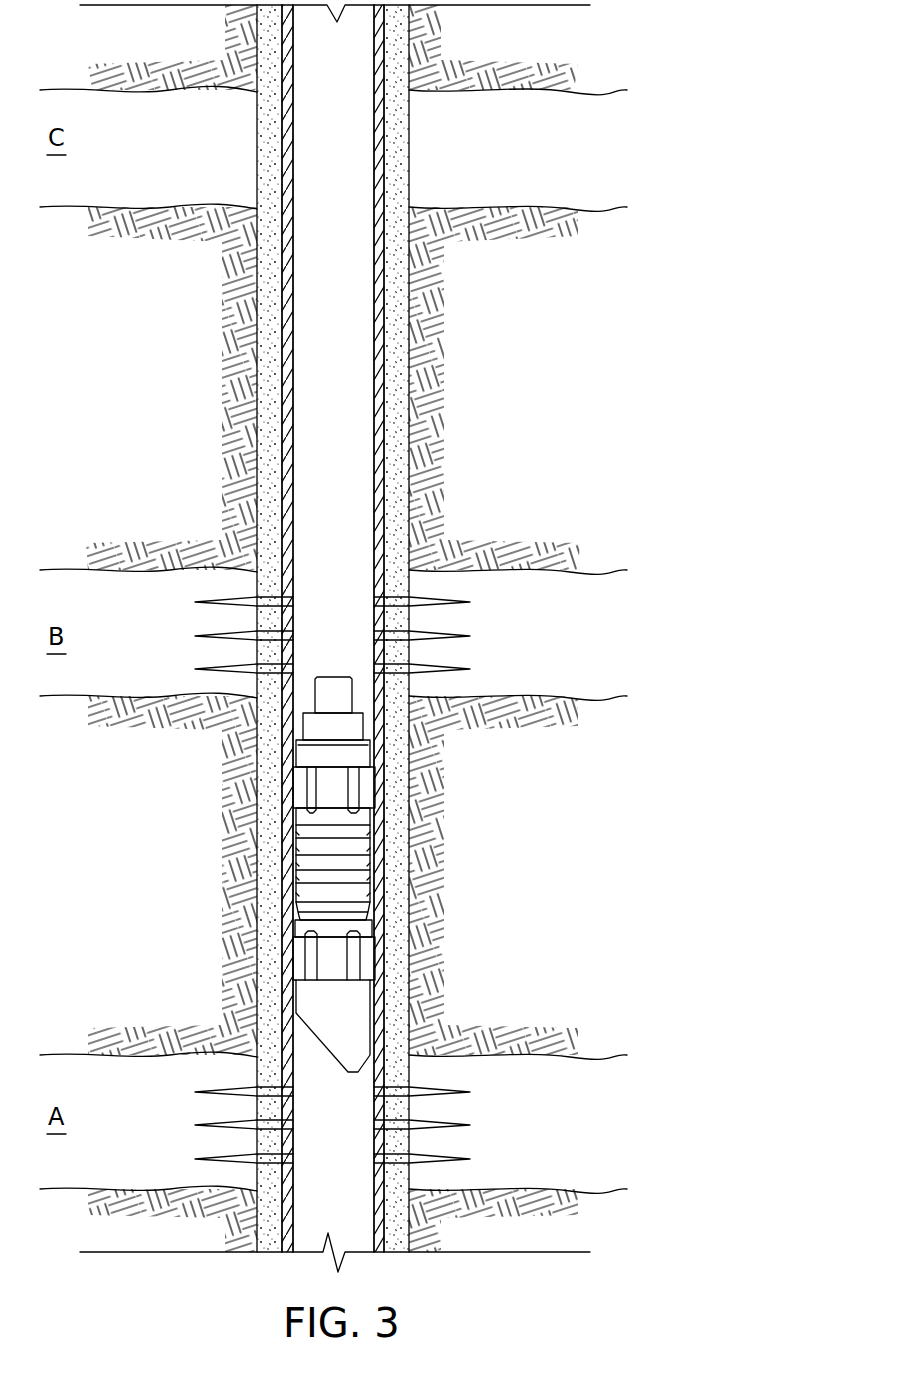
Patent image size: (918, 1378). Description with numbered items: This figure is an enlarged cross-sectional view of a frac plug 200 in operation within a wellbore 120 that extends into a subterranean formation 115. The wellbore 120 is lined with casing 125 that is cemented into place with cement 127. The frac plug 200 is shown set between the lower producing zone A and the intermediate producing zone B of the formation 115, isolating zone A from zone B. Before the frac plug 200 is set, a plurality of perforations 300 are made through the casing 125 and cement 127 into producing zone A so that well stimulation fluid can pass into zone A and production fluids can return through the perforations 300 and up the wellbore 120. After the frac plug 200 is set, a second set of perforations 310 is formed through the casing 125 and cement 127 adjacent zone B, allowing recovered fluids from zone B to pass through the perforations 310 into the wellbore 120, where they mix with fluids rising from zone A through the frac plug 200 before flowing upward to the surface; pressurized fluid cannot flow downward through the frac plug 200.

The wellbore 120 is at (350, 143).
The subterranean formation 115 is at (500, 232).
The cement 127 is at (395, 322).
The casing 125 is at (373, 447).
The frac plug 200 is at (343, 877).
The second set of perforations 310 is at (515, 677).
The perforations 300 is at (515, 1167).